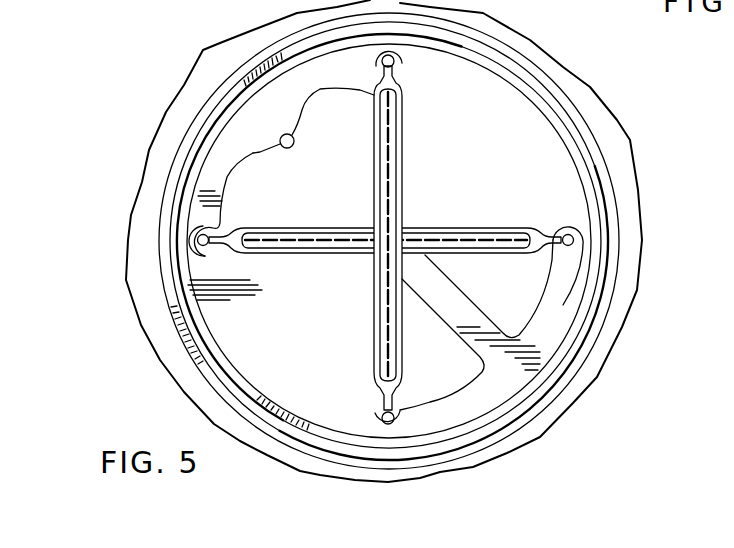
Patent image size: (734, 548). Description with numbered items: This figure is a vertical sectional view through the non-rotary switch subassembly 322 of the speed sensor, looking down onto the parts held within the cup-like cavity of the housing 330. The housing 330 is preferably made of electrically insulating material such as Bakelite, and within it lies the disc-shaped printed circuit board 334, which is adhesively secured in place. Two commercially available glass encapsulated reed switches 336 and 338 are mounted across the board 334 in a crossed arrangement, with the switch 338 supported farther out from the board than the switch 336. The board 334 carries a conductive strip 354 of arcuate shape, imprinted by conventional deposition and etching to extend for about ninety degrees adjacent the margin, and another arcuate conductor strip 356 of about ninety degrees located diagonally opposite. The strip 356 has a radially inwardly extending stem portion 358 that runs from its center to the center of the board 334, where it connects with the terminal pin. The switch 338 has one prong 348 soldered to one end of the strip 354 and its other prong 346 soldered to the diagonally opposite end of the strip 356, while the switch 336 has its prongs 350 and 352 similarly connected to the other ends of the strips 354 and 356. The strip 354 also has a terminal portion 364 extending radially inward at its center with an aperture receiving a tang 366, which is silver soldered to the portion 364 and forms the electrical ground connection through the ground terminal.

The non-rotary switch subassembly 322 is at (612, 182).
The housing 330 is at (620, 277).
The printed circuit board 334 is at (545, 134).
The reed switch 336 is at (457, 227).
The reed switch 338 is at (403, 151).
The prong 346 is at (376, 416).
The prong 348 is at (402, 63).
The prong 350 is at (205, 254).
The prong 352 is at (568, 226).
The conductive strip 354 is at (230, 180).
The conductor strip 356 is at (433, 402).
The stem portion 358 is at (468, 301).
The terminal portion 364 is at (307, 123).
The tang 366 is at (292, 147).